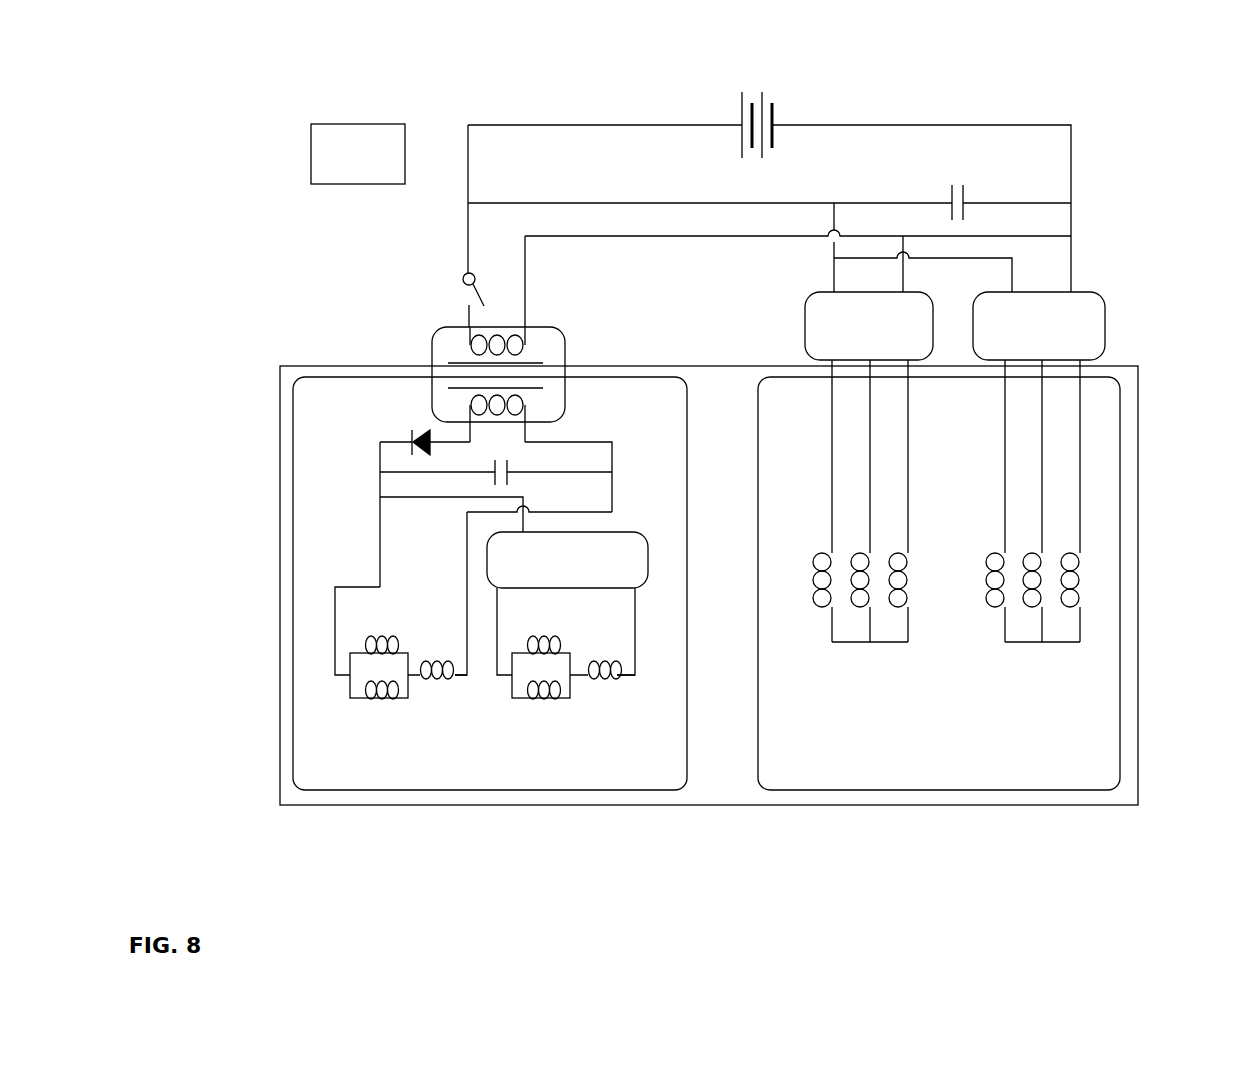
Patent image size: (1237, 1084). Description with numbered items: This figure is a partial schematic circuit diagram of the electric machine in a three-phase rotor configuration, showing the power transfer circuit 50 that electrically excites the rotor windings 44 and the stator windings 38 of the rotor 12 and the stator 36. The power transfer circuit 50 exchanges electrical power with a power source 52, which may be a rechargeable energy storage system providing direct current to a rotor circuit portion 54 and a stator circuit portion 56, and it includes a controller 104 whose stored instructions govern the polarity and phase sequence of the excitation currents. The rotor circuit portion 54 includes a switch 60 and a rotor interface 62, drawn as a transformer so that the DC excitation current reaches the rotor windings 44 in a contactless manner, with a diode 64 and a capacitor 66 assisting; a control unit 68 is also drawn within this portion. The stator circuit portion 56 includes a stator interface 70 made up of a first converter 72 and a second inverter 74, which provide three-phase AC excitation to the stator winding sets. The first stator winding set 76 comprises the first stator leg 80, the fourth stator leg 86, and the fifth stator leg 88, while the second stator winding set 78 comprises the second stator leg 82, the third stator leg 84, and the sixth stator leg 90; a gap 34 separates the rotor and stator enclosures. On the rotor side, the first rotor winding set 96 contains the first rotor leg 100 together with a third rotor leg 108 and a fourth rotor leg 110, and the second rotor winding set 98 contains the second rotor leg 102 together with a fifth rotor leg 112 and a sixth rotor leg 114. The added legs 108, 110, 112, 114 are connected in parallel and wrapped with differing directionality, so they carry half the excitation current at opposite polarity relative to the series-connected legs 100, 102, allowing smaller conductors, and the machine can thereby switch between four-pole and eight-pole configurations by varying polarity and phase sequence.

The rotor 12 is at (295, 413).
The gap 34 is at (718, 548).
The stator 36 is at (1120, 421).
The stator windings 38 is at (797, 714).
The rotor windings 44 is at (318, 760).
The power transfer circuit 50 is at (1132, 113).
The power source 52 is at (774, 92).
The rotor circuit portion 54 is at (503, 339).
The stator circuit portion 56 is at (830, 313).
The switch 60 is at (462, 278).
The rotor interface 62 is at (436, 332).
The diode 64 is at (415, 436).
The capacitor 66 is at (510, 472).
The control unit 68 is at (567, 603).
The stator interface 70 is at (1091, 293).
The first converter 72 is at (869, 326).
The second inverter 74 is at (1039, 326).
The first stator winding set 76 is at (868, 531).
The second stator winding set 78 is at (1038, 531).
The first stator leg 80 is at (830, 510).
The second stator leg 82 is at (1003, 513).
The third stator leg 84 is at (1040, 440).
The fourth stator leg 86 is at (868, 442).
The fifth stator leg 88 is at (910, 460).
The sixth stator leg 90 is at (1082, 448).
The first rotor winding set 96 is at (414, 648).
The second rotor winding set 98 is at (579, 685).
The first rotor leg 100 is at (450, 693).
The second rotor leg 102 is at (614, 689).
The controller 104 is at (358, 154).
The third rotor leg 108 is at (385, 640).
The fourth rotor leg 110 is at (380, 698).
The fifth rotor leg 112 is at (548, 640).
The sixth rotor leg 114 is at (540, 698).